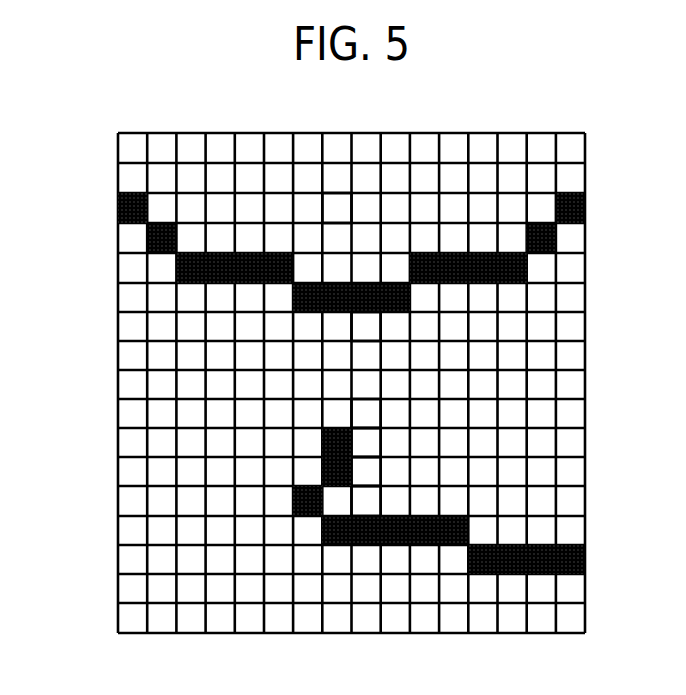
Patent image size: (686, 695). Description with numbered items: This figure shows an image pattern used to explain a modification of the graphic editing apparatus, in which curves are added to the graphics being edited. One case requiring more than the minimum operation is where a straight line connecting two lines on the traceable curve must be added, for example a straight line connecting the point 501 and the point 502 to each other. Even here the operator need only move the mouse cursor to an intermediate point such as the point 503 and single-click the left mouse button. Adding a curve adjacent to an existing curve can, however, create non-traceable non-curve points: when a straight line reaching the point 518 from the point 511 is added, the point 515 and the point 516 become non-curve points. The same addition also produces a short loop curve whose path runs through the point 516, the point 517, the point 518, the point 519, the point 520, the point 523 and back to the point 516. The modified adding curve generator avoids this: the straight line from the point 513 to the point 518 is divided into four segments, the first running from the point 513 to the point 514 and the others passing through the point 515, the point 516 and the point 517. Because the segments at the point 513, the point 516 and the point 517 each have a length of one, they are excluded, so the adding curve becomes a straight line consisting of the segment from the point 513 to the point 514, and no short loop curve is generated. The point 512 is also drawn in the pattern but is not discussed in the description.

The point 501 is at (118, 208).
The point 502 is at (585, 203).
The intermediate point 503 is at (335, 210).
The point 511 is at (410, 302).
The isolated pixel of lower boundary 512 is at (323, 442).
The point 513 is at (365, 327).
The point 514 is at (365, 413).
The non-curve point 515 is at (365, 443).
The non-curve point 516 is at (365, 472).
The point 517 is at (365, 502).
The point 518 is at (400, 547).
The point 519 is at (342, 545).
The point 520 is at (295, 502).
The point 523 is at (323, 472).